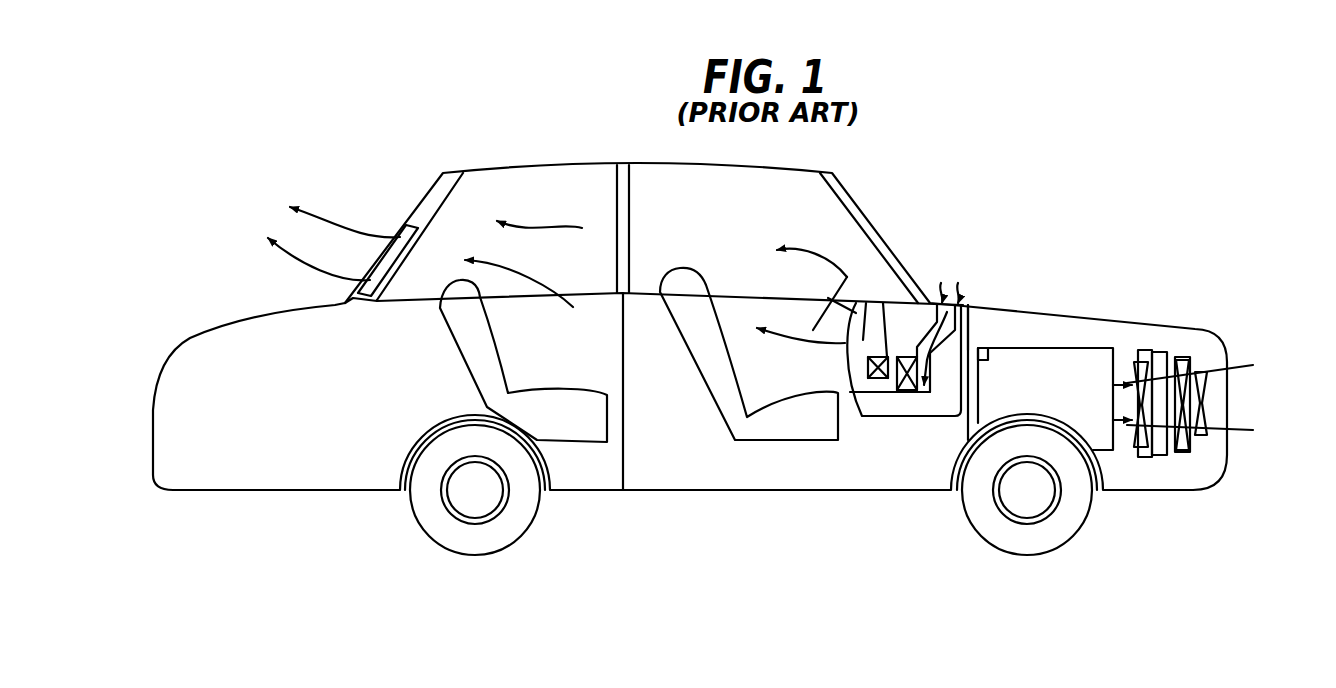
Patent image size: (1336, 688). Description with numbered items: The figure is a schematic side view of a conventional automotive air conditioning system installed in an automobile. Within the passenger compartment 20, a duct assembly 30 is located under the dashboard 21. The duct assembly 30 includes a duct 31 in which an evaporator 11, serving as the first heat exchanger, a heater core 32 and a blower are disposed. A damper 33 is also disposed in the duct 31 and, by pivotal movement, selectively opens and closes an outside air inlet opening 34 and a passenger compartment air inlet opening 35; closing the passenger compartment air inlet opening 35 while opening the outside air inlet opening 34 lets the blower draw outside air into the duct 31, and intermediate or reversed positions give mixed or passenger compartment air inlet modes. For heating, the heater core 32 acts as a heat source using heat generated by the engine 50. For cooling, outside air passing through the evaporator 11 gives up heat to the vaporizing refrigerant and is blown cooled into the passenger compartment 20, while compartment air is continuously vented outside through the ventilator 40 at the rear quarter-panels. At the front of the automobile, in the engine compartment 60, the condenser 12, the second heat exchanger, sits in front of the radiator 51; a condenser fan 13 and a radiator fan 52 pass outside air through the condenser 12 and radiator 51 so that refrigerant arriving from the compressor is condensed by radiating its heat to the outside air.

The evaporator 11 is at (900, 393).
The condenser 12 is at (1189, 358).
The condenser fan 13 is at (1207, 435).
The passenger compartment 20 is at (704, 218).
The dashboard 21 is at (883, 303).
The duct assembly 30 is at (866, 420).
The duct 31 is at (947, 417).
The heater core 32 is at (890, 335).
The damper 33 is at (970, 347).
The outside air inlet opening 34 is at (957, 303).
The passenger compartment air inlet opening 35 is at (986, 355).
The ventilator 40 is at (403, 230).
The engine 50 is at (1031, 395).
The radiator 51 is at (1160, 352).
The radiator fan 52 is at (1133, 447).
The engine compartment 60 is at (1029, 345).